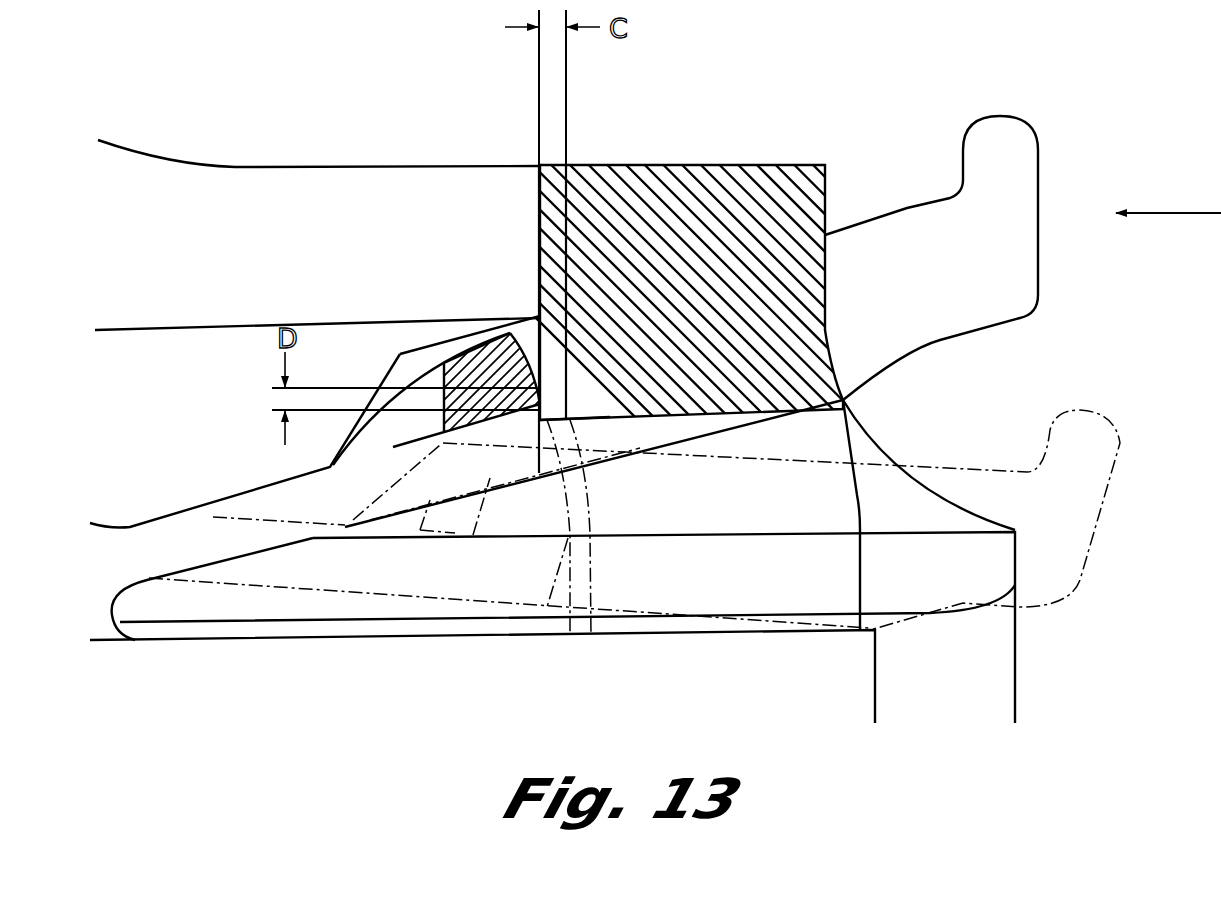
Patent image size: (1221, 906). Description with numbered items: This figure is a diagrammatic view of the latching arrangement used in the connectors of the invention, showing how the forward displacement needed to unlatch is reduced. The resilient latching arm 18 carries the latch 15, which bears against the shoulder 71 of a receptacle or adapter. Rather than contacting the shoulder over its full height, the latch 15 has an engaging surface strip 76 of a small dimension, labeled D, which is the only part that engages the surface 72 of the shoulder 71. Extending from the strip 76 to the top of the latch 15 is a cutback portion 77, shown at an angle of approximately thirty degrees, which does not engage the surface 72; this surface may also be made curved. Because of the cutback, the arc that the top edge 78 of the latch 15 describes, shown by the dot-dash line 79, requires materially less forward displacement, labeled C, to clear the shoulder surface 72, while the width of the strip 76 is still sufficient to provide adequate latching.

The latch 15 is at (467, 373).
The resilient latching arm 18 is at (907, 208).
The shoulder 71 is at (660, 185).
The shoulder surface 72 is at (540, 228).
The engaging surface strip 76 is at (545, 385).
The cutback portion 77 is at (521, 350).
The top edge 78 is at (540, 318).
The dot-dash line 79 is at (595, 517).